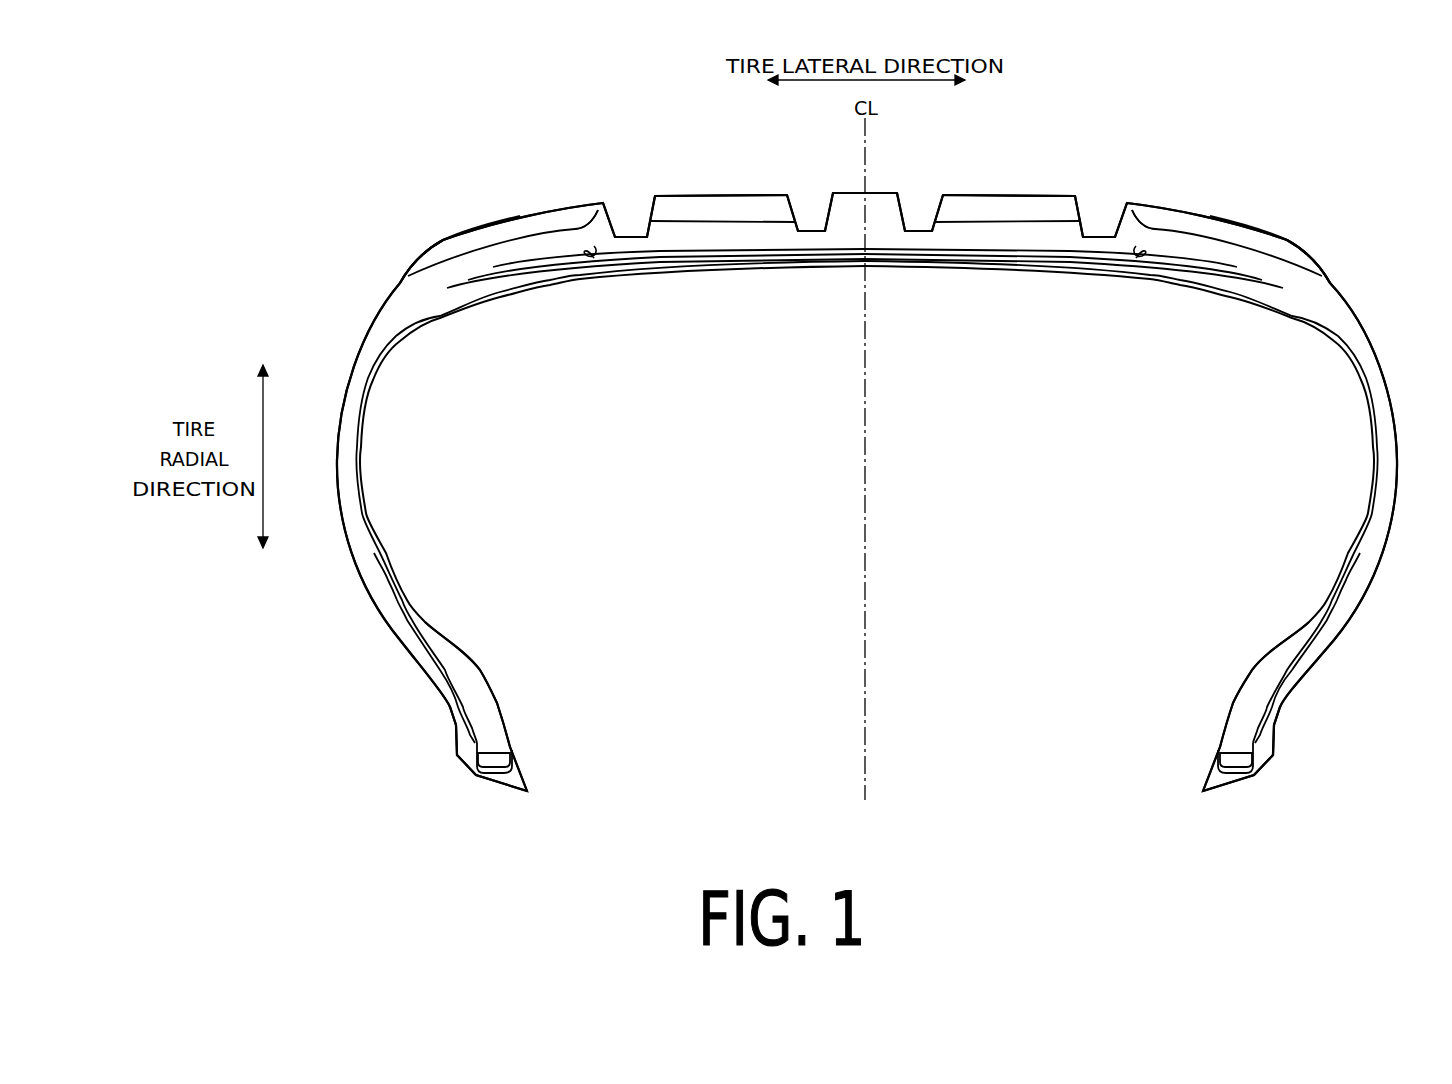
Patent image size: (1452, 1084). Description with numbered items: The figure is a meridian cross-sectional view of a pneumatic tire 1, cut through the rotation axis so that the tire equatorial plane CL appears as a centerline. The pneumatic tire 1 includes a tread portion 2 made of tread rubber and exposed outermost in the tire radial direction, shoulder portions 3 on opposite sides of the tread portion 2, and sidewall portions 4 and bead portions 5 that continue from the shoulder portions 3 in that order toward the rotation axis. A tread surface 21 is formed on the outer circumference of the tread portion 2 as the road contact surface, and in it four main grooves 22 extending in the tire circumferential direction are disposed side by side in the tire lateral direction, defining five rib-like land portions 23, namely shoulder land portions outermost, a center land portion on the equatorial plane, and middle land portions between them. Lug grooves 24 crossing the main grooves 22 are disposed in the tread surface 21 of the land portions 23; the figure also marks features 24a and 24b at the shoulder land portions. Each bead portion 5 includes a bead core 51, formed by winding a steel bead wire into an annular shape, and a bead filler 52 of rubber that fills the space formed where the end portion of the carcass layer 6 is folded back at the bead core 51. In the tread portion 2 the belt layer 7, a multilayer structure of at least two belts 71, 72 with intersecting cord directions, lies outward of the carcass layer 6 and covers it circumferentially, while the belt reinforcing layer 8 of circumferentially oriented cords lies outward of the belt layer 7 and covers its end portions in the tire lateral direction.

The pneumatic tire 1 is at (1063, 147).
The tread portion 2 is at (727, 210).
The tread surface 21 is at (694, 197).
The main grooves 22 is at (628, 230).
The land portions 23 is at (1168, 215).
The lug grooves 24 is at (573, 212).
The land portion inner edge 24a is at (604, 215).
The shoulder edge 24b is at (412, 276).
The shoulder portions 3 is at (461, 236).
The sidewall portions 4 is at (341, 415).
The bead portions 5 is at (454, 728).
The bead core 51 is at (500, 761).
The bead filler 52 is at (485, 703).
The carcass layer 6 is at (1030, 259).
The belt layer 7 is at (865, 309).
The belt 71 is at (686, 256).
The belt 72 is at (733, 258).
The belt reinforcing layer 8 is at (594, 258).